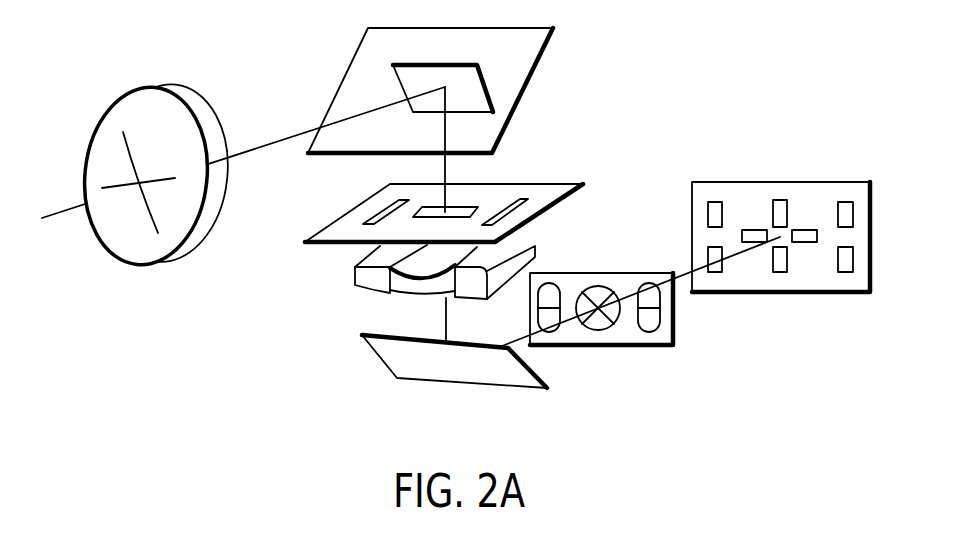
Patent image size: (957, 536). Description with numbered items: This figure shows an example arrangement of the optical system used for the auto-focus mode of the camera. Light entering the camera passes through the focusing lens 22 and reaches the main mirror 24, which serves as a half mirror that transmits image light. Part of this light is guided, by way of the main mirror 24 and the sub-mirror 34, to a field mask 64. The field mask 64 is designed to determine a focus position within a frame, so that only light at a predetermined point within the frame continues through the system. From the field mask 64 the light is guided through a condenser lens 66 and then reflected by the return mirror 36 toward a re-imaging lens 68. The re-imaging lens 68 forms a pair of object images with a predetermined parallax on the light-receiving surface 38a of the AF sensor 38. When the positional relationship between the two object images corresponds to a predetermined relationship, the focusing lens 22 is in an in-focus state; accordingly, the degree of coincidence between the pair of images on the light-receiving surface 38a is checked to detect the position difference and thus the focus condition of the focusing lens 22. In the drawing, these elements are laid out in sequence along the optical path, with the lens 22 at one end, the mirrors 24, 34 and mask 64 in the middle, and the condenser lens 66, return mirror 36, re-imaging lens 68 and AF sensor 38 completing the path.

The focusing lens 22 is at (150, 268).
The main mirror 24 is at (556, 31).
The sub-mirror 34 is at (495, 98).
The field mask 64 is at (579, 182).
The condenser lens 66 is at (352, 283).
The return mirror 36 is at (522, 390).
The re-imaging lens 68 is at (657, 347).
The AF sensor 38 is at (833, 180).
The light-receiving surface 38a is at (845, 272).